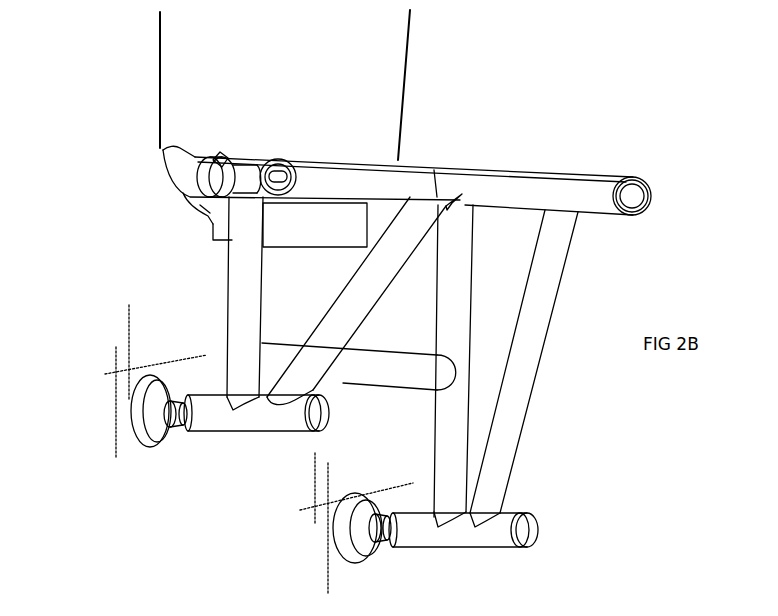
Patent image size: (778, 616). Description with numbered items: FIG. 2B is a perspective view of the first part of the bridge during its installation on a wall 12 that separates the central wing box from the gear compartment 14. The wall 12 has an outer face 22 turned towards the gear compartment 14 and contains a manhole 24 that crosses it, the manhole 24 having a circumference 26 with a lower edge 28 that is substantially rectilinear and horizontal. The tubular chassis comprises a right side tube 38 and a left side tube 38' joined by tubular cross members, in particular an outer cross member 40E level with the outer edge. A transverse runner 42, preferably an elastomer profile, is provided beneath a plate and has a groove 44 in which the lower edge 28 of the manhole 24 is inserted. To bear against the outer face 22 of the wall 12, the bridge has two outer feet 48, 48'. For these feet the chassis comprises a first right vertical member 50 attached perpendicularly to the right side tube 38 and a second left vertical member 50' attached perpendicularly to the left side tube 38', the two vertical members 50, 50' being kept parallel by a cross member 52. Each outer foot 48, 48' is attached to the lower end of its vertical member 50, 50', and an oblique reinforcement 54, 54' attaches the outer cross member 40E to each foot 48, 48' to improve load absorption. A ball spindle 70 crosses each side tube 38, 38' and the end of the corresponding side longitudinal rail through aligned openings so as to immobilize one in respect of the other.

The wall 12 is at (97, 312).
The gear compartment 14 is at (479, 99).
The outer face 22 is at (383, 60).
The manhole 24 is at (273, 59).
The circumference 26 is at (165, 52).
The lower edge 28 is at (207, 215).
The side tube 38 is at (667, 193).
The side tube 38' is at (276, 148).
The outer cross member 40E is at (543, 187).
The transverse runner 42 is at (210, 242).
The groove 44 is at (210, 220).
The outer foot 48 is at (419, 534).
The outer foot 48' is at (217, 399).
The right vertical member 50 is at (512, 366).
The left vertical member 50' is at (210, 303).
The cross member 52 is at (385, 373).
The oblique reinforcement 54 is at (560, 368).
The oblique reinforcement 54' is at (364, 299).
The ball spindle 70 is at (163, 150).